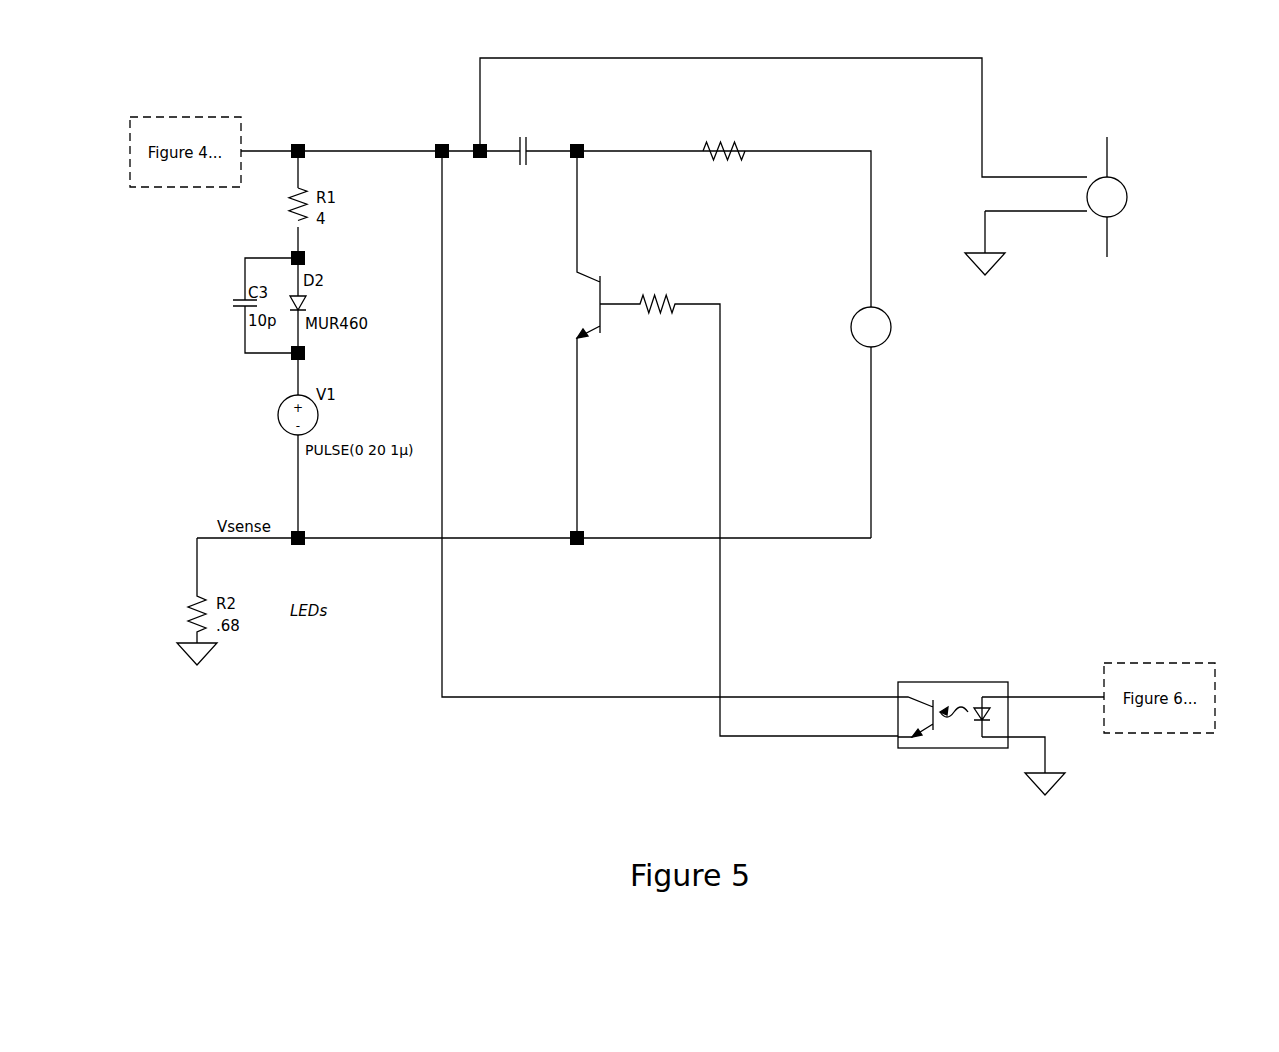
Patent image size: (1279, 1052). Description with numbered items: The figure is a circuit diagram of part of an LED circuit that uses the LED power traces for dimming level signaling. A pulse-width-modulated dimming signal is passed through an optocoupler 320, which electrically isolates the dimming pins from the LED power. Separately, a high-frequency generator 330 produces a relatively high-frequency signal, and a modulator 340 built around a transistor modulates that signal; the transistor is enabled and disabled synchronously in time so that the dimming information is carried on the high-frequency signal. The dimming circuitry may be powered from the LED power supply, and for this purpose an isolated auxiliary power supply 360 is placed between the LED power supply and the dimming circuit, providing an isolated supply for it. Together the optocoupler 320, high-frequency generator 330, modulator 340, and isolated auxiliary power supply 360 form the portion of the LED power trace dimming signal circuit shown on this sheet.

The optocoupler 320 is at (910, 812).
The high-frequency generator 330 is at (975, 605).
The modulator 340 is at (620, 602).
The isolated auxiliary power supply 360 is at (1178, 375).